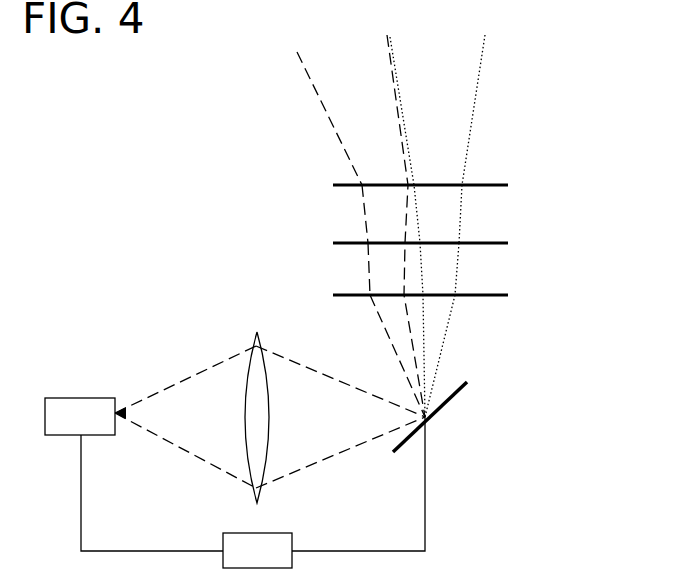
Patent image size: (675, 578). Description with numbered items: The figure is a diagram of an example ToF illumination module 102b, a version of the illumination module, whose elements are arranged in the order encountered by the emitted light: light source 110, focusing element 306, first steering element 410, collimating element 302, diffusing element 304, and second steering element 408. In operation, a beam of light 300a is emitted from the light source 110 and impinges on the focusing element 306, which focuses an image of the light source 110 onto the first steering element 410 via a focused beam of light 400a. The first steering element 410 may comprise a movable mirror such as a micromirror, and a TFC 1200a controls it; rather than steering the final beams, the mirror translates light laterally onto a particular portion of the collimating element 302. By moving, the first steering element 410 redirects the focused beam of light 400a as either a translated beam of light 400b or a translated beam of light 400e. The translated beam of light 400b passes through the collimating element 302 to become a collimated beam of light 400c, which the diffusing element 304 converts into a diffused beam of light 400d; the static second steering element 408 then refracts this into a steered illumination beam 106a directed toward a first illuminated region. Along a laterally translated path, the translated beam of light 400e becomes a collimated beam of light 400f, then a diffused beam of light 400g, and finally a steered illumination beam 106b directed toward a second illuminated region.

The ToF illumination module 102b is at (70, 208).
The steered illumination beam 106a is at (368, 81).
The steered illumination beam 106b is at (462, 81).
The second steering element 408 is at (333, 185).
The diffusing element 304 is at (333, 243).
The collimating element 302 is at (333, 295).
The diffused beam of light 400d is at (367, 213).
The collimated beam of light 400c is at (368, 272).
The translated beam of light 400b is at (385, 330).
The diffused beam of light 400g is at (461, 210).
The collimated beam of light 400f is at (457, 272).
The translated beam of light 400e is at (452, 320).
The first steering element 410 is at (460, 380).
The focusing element 306 is at (257, 333).
The beam of light 300a is at (177, 382).
The focused beam of light 400a is at (345, 448).
The light source 110 is at (99, 429).
The TFC 1200a is at (285, 561).